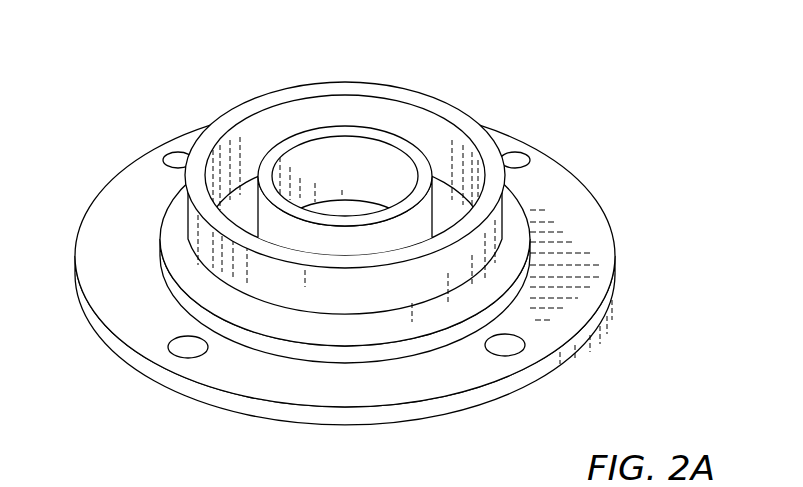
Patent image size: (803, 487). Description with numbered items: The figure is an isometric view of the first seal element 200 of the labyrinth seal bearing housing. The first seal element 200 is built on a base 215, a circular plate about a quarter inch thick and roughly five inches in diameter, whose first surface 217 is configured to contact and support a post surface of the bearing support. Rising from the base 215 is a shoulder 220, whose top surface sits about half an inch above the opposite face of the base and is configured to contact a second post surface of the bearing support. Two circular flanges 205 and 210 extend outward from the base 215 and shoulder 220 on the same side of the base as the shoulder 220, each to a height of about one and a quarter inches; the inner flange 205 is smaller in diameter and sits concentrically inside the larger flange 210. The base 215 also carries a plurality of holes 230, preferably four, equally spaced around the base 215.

The first seal element 200 is at (331, 249).
The flange 205 is at (375, 130).
The flange 210 is at (313, 90).
The base 215 is at (233, 402).
The first surface 217 is at (97, 258).
The shoulder 220 is at (390, 333).
The holes 230 is at (188, 348).